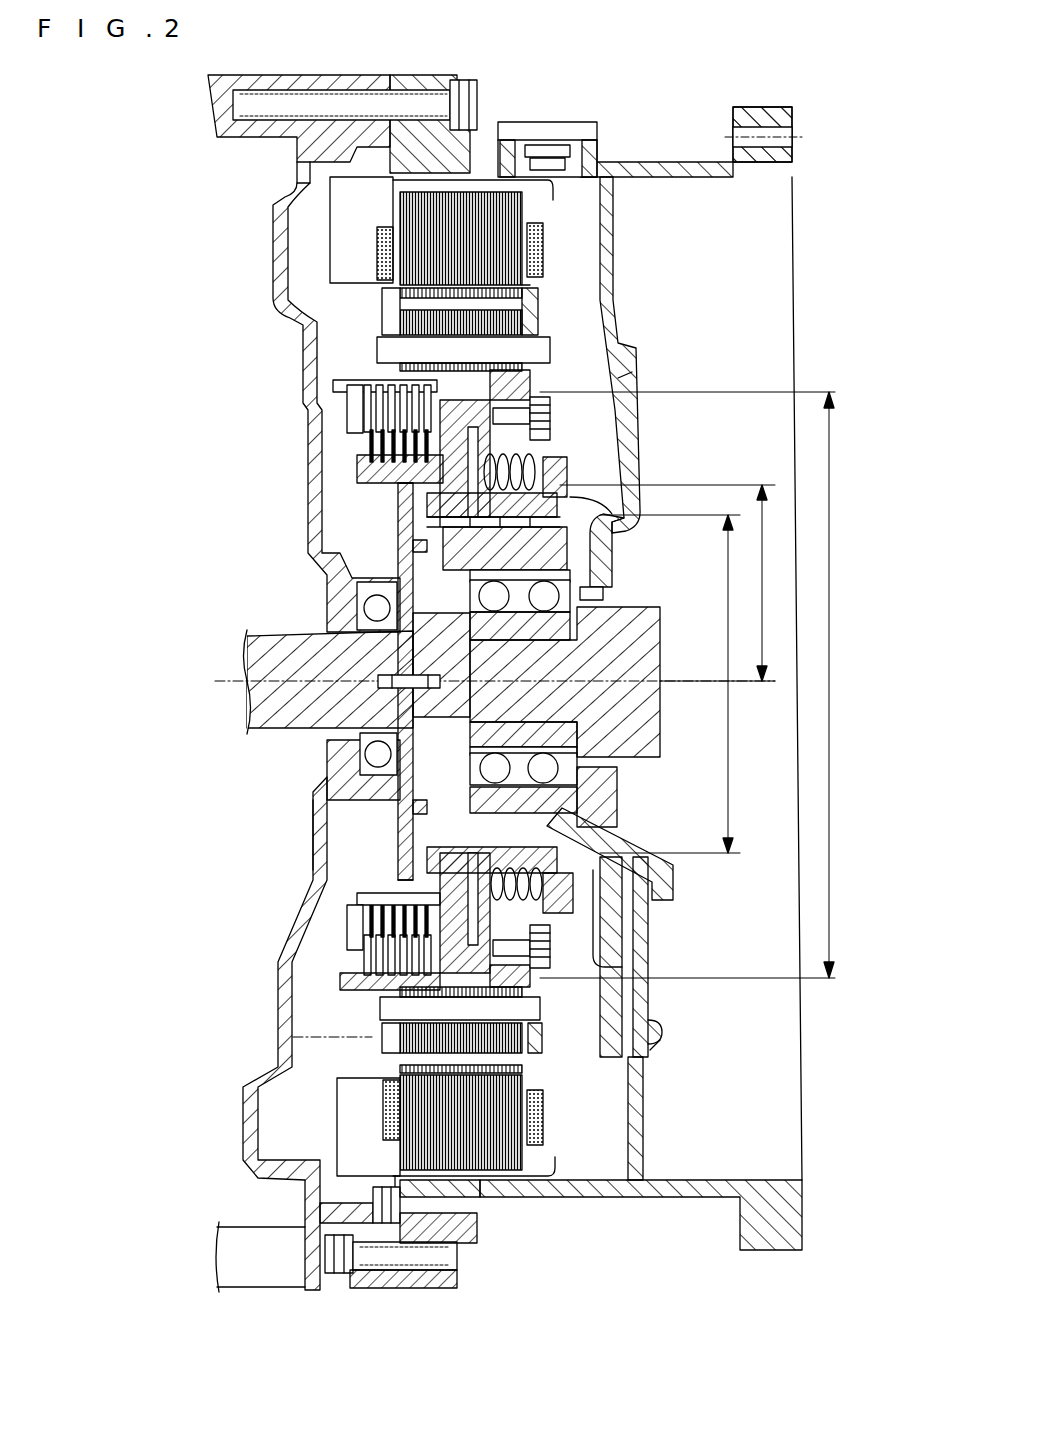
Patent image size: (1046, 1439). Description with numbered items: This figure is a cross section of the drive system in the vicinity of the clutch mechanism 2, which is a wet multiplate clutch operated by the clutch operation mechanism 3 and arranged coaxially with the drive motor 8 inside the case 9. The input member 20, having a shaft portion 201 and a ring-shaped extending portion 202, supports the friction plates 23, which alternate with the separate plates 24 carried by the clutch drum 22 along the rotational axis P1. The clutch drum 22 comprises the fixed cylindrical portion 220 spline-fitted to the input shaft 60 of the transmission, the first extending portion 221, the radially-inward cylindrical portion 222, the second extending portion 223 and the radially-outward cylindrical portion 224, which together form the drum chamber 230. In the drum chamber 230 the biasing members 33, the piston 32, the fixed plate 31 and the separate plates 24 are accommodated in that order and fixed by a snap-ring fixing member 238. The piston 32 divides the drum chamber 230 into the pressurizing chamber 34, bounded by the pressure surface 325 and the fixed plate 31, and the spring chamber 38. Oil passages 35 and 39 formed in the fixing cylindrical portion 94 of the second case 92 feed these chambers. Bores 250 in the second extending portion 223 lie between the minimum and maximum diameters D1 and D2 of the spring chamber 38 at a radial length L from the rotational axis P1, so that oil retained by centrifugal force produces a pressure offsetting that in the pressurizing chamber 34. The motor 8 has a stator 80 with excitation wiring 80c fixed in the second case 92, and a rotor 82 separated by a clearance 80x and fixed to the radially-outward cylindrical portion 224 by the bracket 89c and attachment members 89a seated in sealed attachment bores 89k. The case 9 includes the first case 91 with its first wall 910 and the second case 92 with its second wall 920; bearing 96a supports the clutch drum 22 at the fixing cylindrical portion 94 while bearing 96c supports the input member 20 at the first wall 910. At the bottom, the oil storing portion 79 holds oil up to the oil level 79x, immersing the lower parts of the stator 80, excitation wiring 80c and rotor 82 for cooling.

The clutch mechanism 2 is at (272, 752).
The clutch operation mechanism 3 is at (678, 1100).
The drive motor 8 is at (487, 1178).
The case 9 is at (339, 129).
The input member 20 is at (255, 745).
The clutch drum 22 is at (560, 447).
The friction plates 23 is at (385, 440).
The separate plates 24 is at (380, 395).
The fixed plate 31 is at (400, 455).
The piston 32 is at (365, 978).
The biasing members 33 is at (545, 500).
The pressurizing chamber 34 is at (404, 515).
The oil passage 35 is at (650, 750).
The spring chamber 38 is at (640, 507).
The oil passage 39 is at (620, 782).
The input shaft 60 is at (655, 627).
The oil storing portion 79 is at (268, 1113).
The oil level 79x is at (370, 1036).
The stator 80 is at (541, 243).
The excitation wiring 80c is at (388, 250).
The clearance 80x is at (541, 262).
The rotor 82 is at (540, 322).
The attachment members 89a is at (548, 413).
The bracket 89c is at (602, 334).
The attachment bores 89k is at (615, 384).
The first case 91 is at (380, 74).
The second case 92 is at (650, 161).
The fixing cylindrical portion 94 is at (607, 544).
The bearing 96a is at (600, 582).
The bearing 96c is at (345, 610).
The shaft portion 201 is at (262, 690).
The extending portion 202 is at (330, 835).
The fixed cylindrical portion 220 is at (320, 640).
The first extending portion 221 is at (415, 548).
The radially-inward cylindrical portion 222 is at (560, 843).
The second extending portion 223 is at (590, 460).
The radially-outward cylindrical portion 224 is at (630, 372).
The drum chamber 230 is at (535, 430).
The fixing member 238 is at (350, 402).
The bores 250 is at (560, 468).
The pressure surface 325 is at (372, 932).
The first wall 910 is at (306, 333).
The second wall 920 is at (609, 282).
The rotational axis P1 is at (660, 680).
The length L is at (667, 583).
The minimum diameter D1 is at (673, 684).
The maximum diameter D2 is at (693, 685).